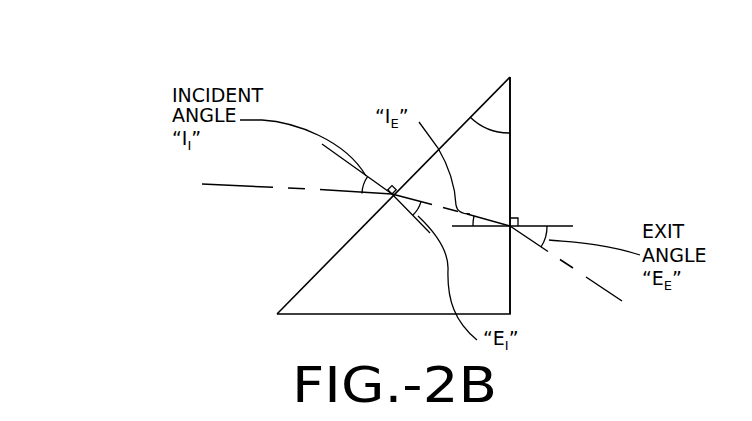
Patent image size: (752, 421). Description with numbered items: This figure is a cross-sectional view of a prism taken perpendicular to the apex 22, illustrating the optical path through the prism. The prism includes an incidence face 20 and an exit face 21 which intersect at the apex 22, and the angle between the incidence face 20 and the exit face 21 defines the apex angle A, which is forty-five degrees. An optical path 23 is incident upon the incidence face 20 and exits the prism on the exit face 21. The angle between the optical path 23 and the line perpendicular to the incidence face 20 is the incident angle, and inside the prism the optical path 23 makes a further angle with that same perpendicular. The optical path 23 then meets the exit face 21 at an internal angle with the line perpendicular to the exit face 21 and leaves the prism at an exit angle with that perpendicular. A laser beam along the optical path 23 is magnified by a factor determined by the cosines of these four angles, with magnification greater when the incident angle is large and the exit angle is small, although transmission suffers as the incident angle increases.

The incidence face 20 is at (333, 257).
The exit face 21 is at (510, 177).
The apex 22 is at (510, 78).
The optical path 23 is at (233, 187).
The apex angle A is at (484, 124).